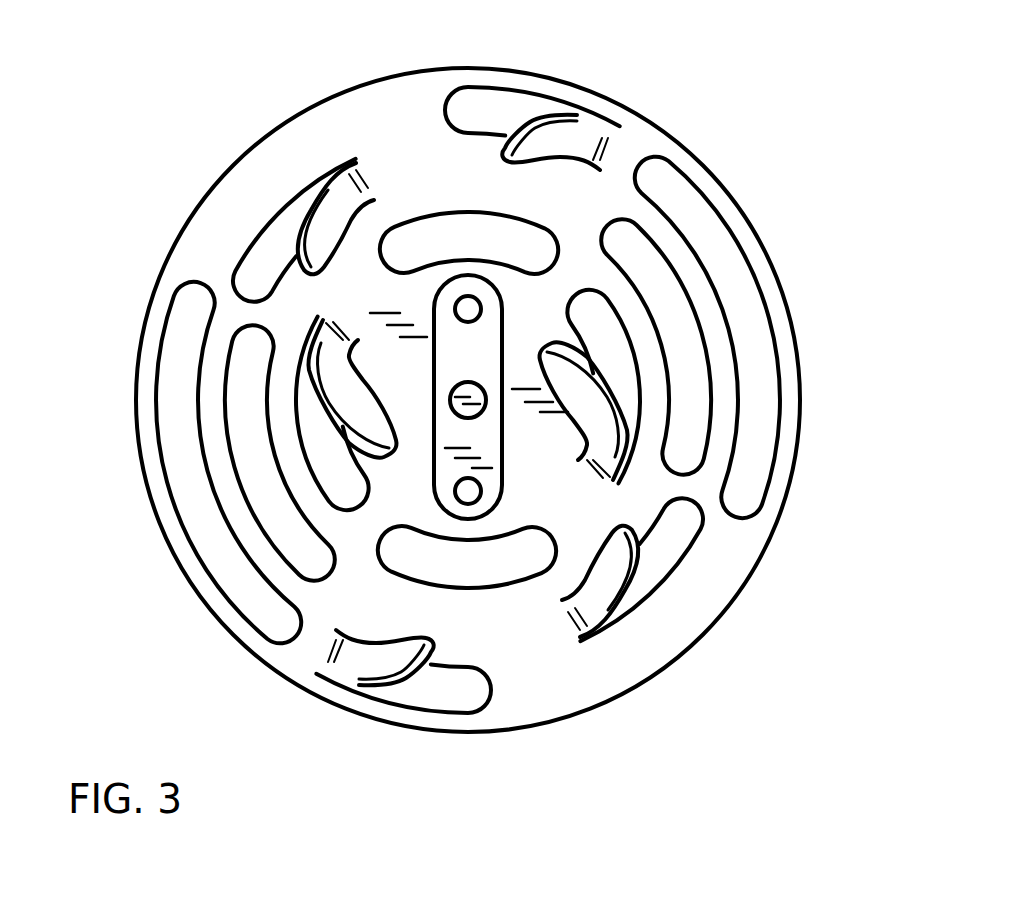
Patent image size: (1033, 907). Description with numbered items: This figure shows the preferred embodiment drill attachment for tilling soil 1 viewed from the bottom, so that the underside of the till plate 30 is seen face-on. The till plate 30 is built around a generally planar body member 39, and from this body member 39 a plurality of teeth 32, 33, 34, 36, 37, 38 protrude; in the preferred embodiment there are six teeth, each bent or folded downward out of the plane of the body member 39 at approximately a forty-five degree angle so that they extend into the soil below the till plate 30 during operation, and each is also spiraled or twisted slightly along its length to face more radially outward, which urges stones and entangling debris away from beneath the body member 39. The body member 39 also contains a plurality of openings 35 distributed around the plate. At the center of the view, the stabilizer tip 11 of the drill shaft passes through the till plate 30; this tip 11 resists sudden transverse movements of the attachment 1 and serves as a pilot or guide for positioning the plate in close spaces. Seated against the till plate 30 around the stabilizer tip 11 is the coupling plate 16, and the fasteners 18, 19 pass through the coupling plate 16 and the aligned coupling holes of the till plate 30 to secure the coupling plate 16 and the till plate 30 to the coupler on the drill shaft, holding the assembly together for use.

The drill attachment for tilling soil 1 is at (690, 51).
The till plate 30 is at (732, 176).
The coupling plate 16 is at (455, 365).
The fastener 18 is at (468, 308).
The stabilizer tip 11 is at (462, 393).
The fastener 19 is at (468, 492).
The generally planar body member 39 is at (300, 140).
The tooth 38 is at (573, 378).
The tooth 32 is at (530, 120).
The tooth 33 is at (402, 660).
The tooth 34 is at (620, 577).
The opening 35 is at (693, 447).
The tooth 36 is at (313, 250).
The tooth 37 is at (372, 424).